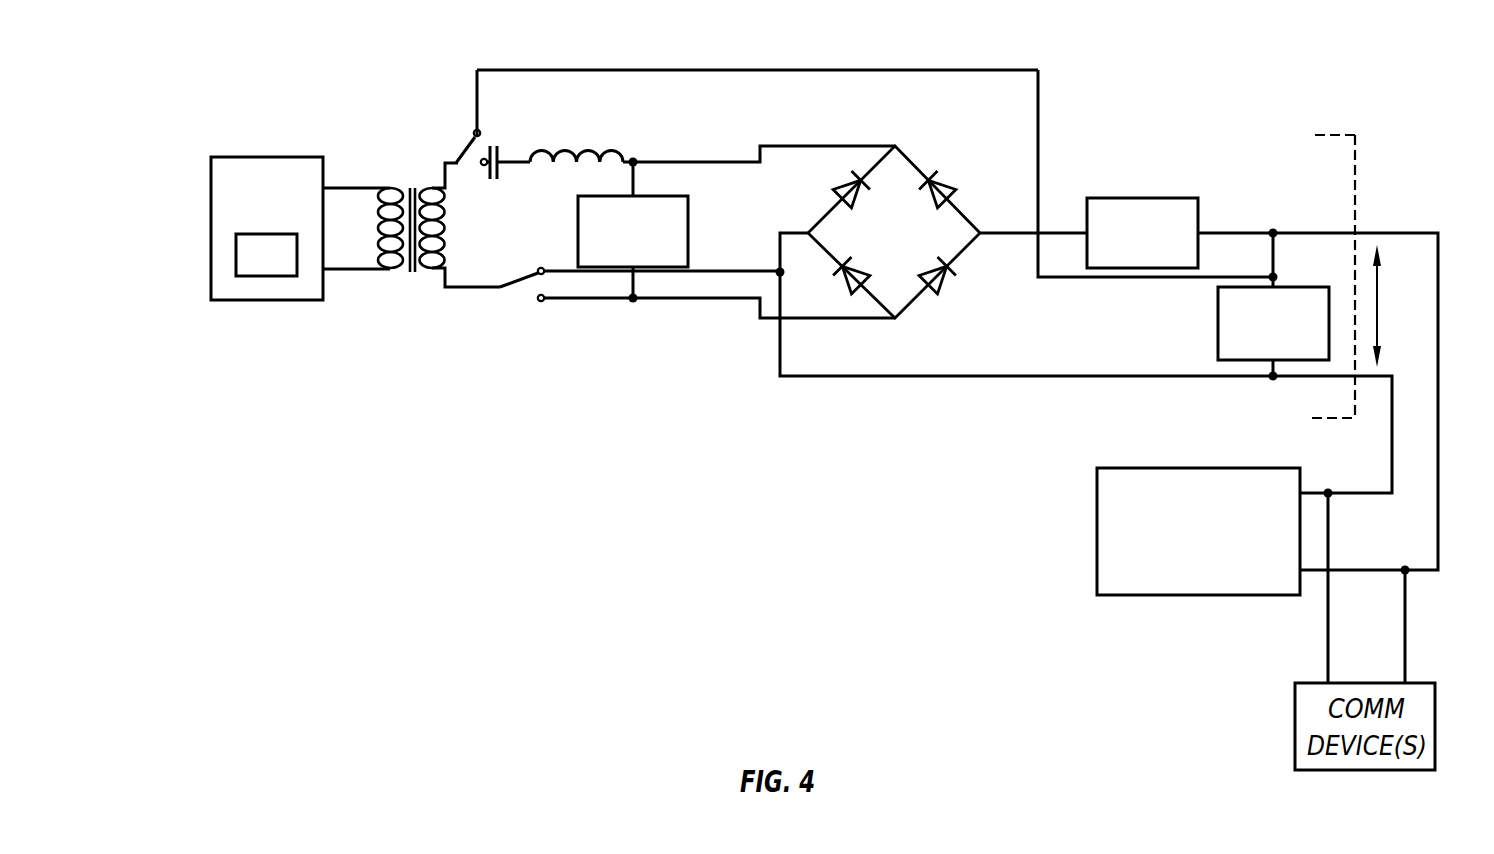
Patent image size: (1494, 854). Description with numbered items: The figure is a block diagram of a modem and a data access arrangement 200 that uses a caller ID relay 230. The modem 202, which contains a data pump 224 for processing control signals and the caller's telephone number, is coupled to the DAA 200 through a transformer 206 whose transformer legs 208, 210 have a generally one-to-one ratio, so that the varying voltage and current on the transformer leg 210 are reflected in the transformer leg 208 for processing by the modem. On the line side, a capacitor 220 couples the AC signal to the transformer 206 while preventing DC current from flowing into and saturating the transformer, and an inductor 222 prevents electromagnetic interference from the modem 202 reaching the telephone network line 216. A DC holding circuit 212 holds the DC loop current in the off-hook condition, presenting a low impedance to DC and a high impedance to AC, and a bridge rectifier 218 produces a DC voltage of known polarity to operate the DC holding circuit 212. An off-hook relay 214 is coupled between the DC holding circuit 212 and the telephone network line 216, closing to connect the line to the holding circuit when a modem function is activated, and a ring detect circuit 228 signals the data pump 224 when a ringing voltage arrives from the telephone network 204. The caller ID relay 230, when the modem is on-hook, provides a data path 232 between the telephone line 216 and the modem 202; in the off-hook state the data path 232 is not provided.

The data access arrangement 200 is at (768, 565).
The modem 202 is at (243, 157).
The telephone network 204 is at (1140, 468).
The transformer 206 is at (408, 275).
The transformer leg 208 is at (390, 198).
The transformer leg 210 is at (427, 275).
The DC holding circuit 212 is at (578, 240).
The off-hook relay 214 is at (1140, 198).
The telephone network line 216 is at (1380, 272).
The bridge rectifier 218 is at (915, 165).
The capacitor 220 is at (497, 148).
The inductor 222 is at (588, 148).
The data pump 224 is at (257, 277).
The ring detect circuit 228 is at (1218, 330).
The caller ID relay 230 is at (525, 280).
The data path 232 is at (943, 70).